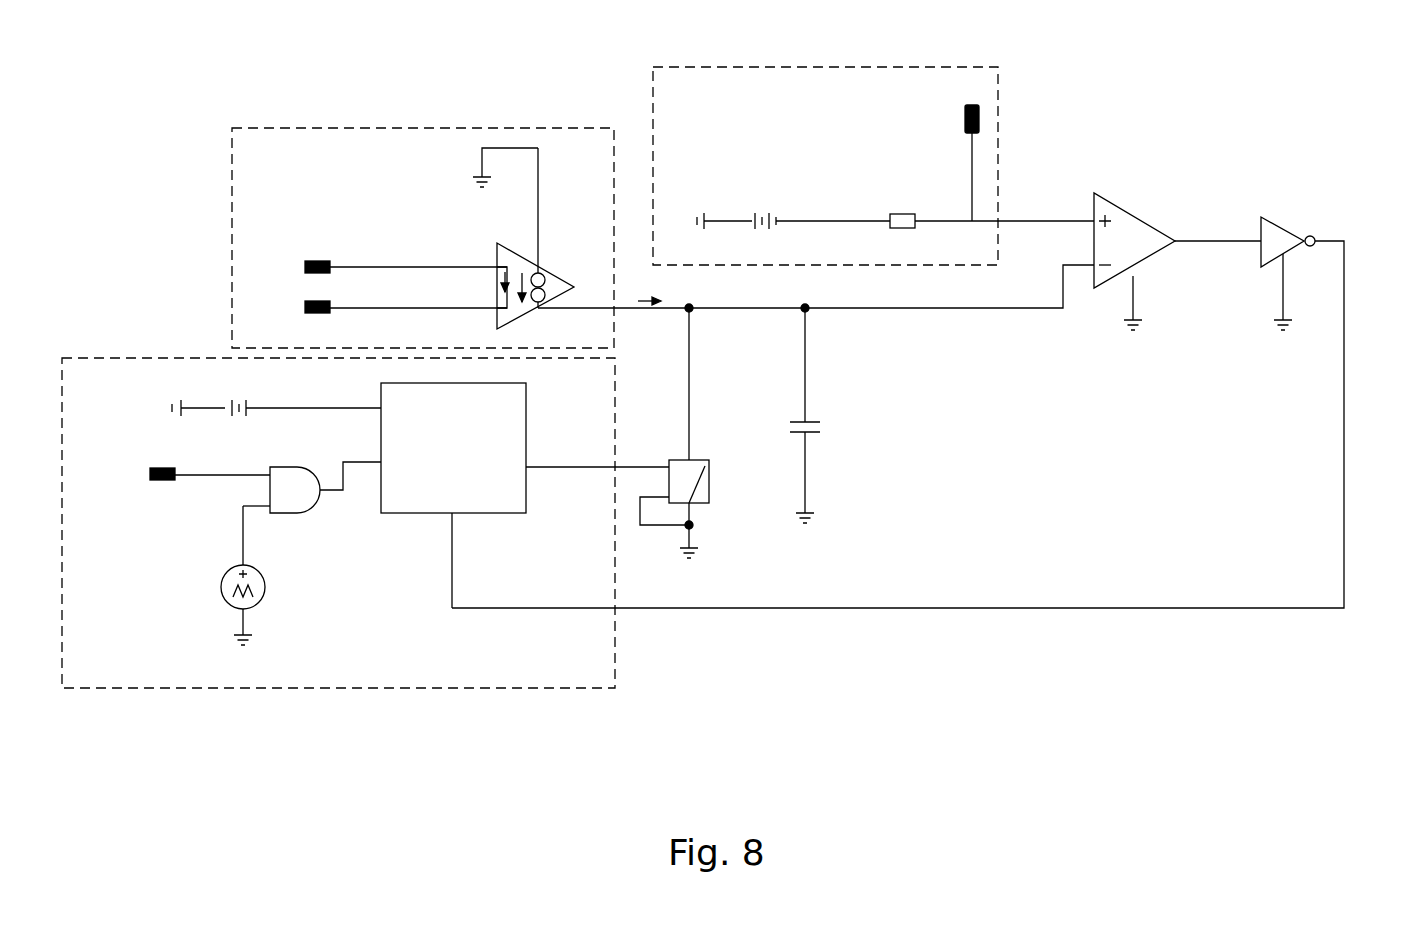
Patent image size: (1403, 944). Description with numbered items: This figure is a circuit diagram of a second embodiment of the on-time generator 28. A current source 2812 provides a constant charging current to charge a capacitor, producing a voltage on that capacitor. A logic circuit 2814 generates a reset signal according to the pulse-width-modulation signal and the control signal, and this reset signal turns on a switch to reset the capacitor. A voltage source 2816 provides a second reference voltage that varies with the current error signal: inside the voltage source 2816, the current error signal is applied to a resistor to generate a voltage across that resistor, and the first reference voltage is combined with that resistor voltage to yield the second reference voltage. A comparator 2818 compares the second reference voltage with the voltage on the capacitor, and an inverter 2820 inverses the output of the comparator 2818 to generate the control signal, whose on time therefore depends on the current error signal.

The on-time generator 28 is at (1289, 92).
The current source 2812 is at (418, 128).
The logic circuit 2814 is at (137, 358).
The voltage source 2816 is at (998, 115).
The comparator 2818 is at (1133, 213).
The inverter 2820 is at (1280, 220).